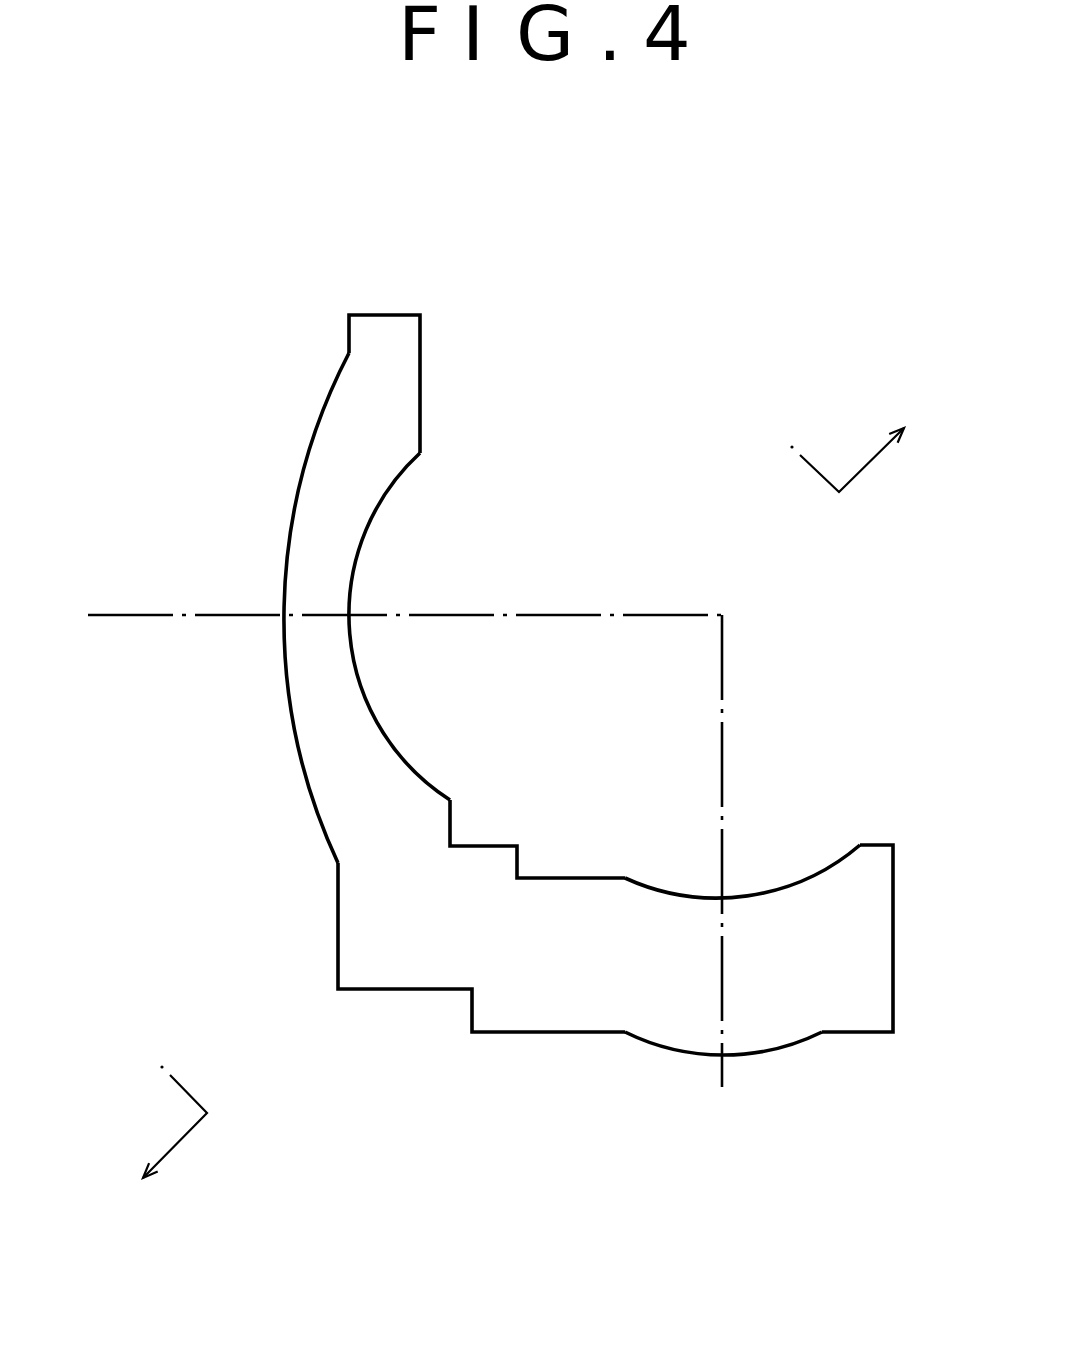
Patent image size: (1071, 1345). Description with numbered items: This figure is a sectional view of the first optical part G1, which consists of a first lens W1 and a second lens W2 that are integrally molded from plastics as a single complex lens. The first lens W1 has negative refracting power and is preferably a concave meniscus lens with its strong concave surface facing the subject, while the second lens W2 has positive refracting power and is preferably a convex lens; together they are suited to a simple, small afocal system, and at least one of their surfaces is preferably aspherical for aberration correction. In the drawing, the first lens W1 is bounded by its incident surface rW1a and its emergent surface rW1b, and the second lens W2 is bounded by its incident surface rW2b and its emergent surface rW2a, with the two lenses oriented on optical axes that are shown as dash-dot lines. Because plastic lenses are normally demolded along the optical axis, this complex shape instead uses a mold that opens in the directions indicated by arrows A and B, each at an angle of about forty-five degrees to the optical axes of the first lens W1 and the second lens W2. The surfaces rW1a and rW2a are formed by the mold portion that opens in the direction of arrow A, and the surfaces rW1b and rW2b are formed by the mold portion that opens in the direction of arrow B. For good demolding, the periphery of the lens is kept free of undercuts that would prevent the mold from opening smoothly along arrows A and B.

The first optical part G1 is at (275, 260).
The first lens W1 is at (328, 443).
The second lens W2 is at (793, 1008).
The incident surface of the first lens rW1a is at (297, 740).
The emergent surface of the first lens rW1b is at (372, 712).
The emergent surface of the second lens rW2a is at (657, 1050).
The incident surface of the second lens rW2b is at (782, 885).
The arrow A is at (167, 1121).
The arrow B is at (847, 445).